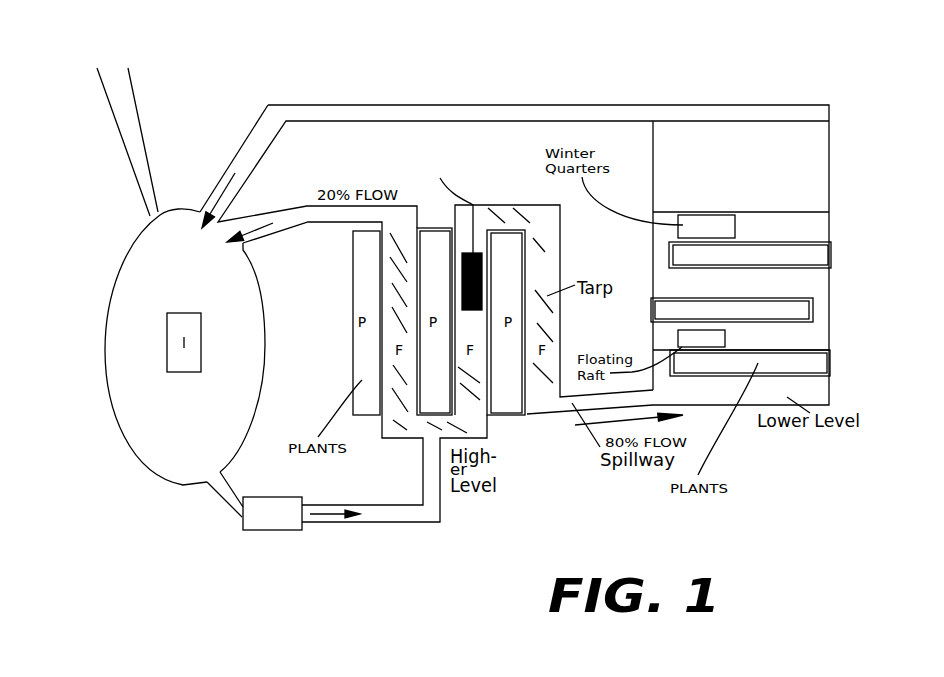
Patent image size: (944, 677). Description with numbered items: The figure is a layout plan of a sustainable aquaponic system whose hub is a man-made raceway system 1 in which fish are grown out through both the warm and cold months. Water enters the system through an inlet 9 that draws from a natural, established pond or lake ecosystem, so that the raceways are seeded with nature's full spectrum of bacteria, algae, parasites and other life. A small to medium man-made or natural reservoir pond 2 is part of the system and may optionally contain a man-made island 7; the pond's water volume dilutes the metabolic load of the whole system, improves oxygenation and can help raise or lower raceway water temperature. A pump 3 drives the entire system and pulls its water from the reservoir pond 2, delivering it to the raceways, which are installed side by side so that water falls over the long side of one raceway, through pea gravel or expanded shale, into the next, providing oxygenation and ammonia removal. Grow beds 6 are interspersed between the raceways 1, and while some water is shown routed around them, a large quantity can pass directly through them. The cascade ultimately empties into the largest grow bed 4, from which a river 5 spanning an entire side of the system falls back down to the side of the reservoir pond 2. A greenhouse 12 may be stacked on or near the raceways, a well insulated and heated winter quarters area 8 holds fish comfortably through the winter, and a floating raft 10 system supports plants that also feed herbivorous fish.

The raceway system 1 is at (540, 223).
The reservoir pond 2 is at (238, 325).
The pump 3 is at (283, 530).
The largest grow bed 4 is at (785, 164).
The river 5 is at (573, 116).
The grow beds 6 is at (353, 280).
The man-made island 7 is at (190, 325).
The winter quarters area 8 is at (708, 227).
The inlet 9 is at (128, 132).
The floating raft 10 is at (687, 340).
The greenhouse 12 is at (482, 279).